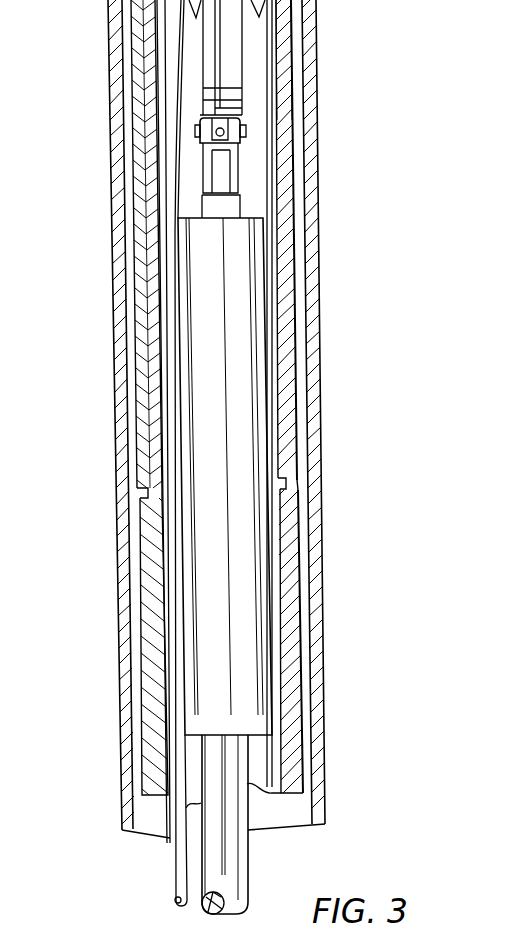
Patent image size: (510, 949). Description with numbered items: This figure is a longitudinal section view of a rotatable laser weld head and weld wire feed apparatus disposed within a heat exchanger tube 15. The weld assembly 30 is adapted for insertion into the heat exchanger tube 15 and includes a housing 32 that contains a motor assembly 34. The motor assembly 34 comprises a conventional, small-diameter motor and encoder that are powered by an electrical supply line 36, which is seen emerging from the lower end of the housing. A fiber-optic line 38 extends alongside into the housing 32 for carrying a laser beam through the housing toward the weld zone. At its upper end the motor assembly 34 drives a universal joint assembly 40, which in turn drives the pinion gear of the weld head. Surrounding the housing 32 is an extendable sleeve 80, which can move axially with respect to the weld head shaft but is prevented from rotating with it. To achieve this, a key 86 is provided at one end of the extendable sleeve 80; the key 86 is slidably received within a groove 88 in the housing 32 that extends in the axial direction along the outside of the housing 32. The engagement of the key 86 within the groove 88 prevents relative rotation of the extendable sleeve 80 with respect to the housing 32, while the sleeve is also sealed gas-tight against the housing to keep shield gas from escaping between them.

The heat exchanger tube 15 is at (325, 735).
The weld assembly 30 is at (298, 523).
The housing 32 is at (295, 693).
The motor assembly 34 is at (237, 613).
The electrical supply line 36 is at (250, 857).
The fiber-optic line 38 is at (173, 862).
The universal joint assembly 40 is at (235, 22).
The extendable sleeve 80 is at (288, 87).
The key 86 is at (288, 468).
The groove 88 is at (283, 433).